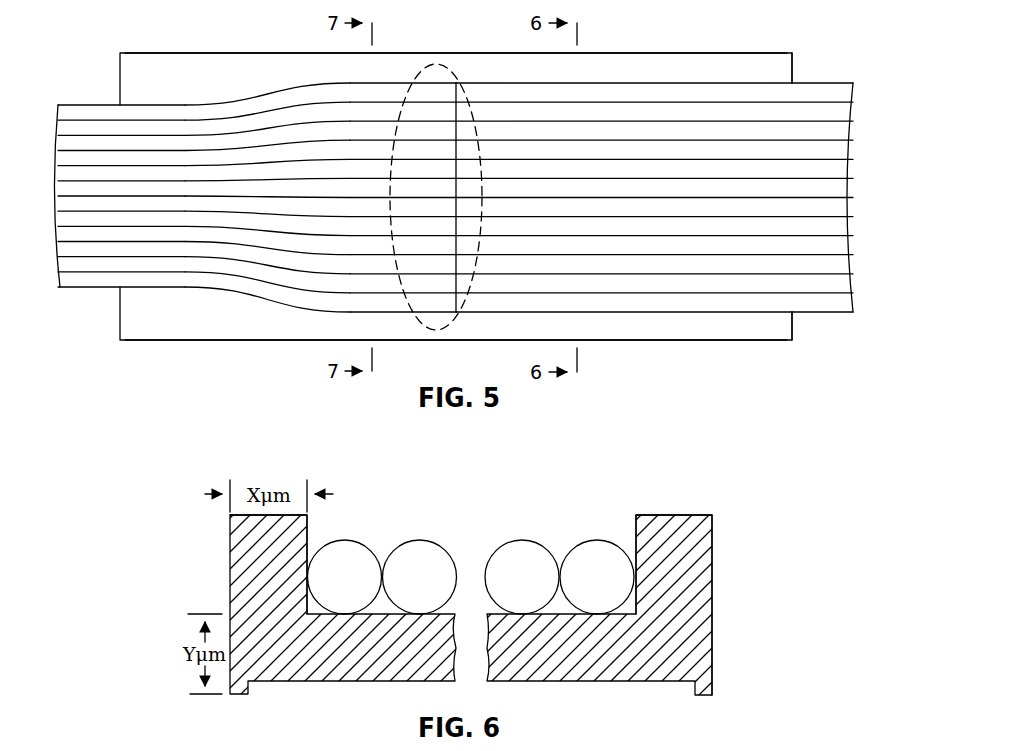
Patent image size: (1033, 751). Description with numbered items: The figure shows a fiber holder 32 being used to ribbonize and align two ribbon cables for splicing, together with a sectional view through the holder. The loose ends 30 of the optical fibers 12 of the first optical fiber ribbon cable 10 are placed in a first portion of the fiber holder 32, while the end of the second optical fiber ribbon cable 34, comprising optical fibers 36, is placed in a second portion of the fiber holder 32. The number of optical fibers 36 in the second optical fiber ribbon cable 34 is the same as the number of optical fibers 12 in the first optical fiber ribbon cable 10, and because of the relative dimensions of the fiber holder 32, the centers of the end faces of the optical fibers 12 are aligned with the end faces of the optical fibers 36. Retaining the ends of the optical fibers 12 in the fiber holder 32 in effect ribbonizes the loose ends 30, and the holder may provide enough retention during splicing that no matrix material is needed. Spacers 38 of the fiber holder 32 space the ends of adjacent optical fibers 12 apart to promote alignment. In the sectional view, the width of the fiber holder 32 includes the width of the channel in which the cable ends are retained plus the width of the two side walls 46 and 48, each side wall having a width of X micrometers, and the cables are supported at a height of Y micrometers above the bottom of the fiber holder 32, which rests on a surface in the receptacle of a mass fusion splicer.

In FIG. 5, the first optical fiber ribbon cable 10 is at (103, 299).
In FIG. 5, the optical fibers 12 is at (62, 104).
In FIG. 5, the loose ends 30 is at (430, 63).
In FIG. 5, the fiber holder 32 is at (268, 348).
In FIG. 6, the fiber holder 32 is at (313, 694).
In FIG. 5, the second optical fiber ribbon cable 34 is at (814, 320).
In FIG. 5, the optical fibers 36 is at (815, 82).
In FIG. 6, the optical fibers 36 is at (348, 540).
In FIG. 5, the spacers 38 is at (372, 118).
In FIG. 5, the side wall 46 is at (647, 53).
In FIG. 6, the side wall 46 is at (230, 547).
In FIG. 5, the side wall 48 is at (662, 342).
In FIG. 6, the side wall 48 is at (715, 552).